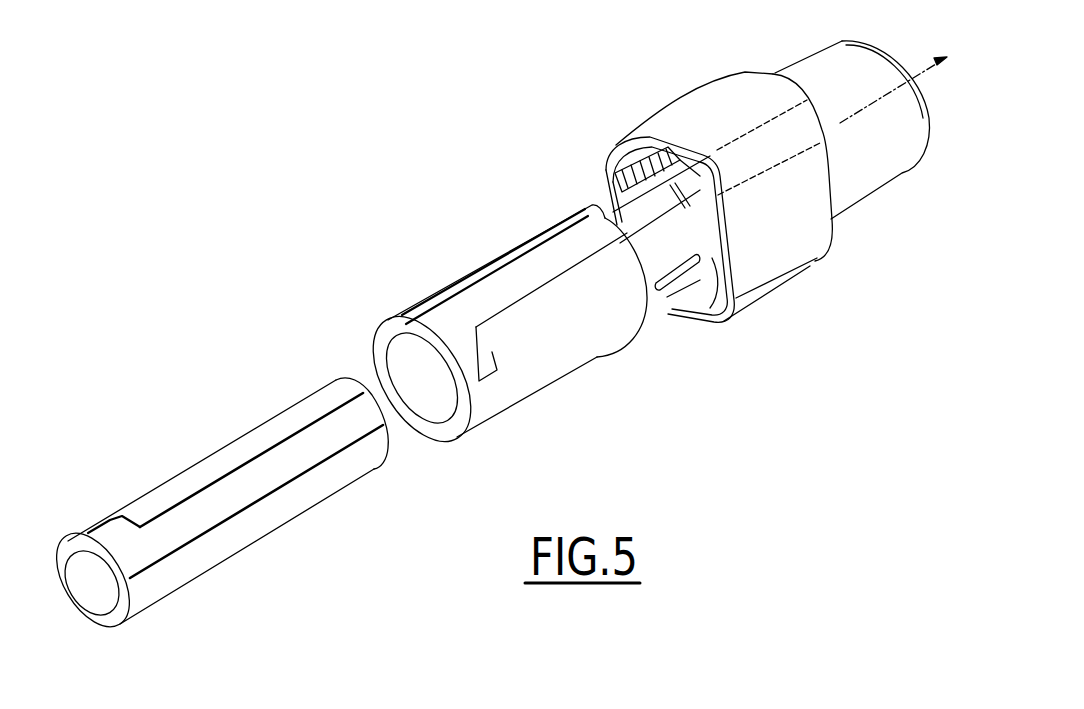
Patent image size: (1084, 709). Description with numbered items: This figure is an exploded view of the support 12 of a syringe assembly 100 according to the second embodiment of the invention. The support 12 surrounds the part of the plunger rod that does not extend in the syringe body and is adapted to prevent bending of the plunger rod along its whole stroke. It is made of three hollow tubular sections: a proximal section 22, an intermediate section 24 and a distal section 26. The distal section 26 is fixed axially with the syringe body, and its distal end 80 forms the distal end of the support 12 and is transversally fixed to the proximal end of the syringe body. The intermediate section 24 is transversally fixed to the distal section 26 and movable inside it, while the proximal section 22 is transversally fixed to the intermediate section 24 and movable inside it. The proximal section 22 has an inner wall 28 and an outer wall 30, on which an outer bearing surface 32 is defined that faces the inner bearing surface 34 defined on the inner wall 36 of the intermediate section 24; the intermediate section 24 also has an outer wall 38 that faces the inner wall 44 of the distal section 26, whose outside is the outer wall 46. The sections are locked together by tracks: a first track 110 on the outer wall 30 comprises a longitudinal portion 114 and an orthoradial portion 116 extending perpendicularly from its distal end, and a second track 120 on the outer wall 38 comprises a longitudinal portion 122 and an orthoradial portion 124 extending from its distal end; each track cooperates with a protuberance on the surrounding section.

The syringe assembly 100 is at (494, 351).
The support 12 is at (623, 269).
The proximal section 22 is at (237, 492).
The intermediate section 24 is at (473, 320).
The distal section 26 is at (760, 221).
The inner wall 28 is at (95, 582).
The outer wall 30 is at (178, 568).
The outer bearing surface 32 is at (358, 458).
The inner bearing surface 34 is at (403, 357).
The inner wall 36 is at (432, 402).
The outer wall 38 is at (498, 392).
The inner wall 44 is at (703, 323).
The outer wall 46 is at (780, 232).
The distal end 80 is at (730, 313).
The first track 110 is at (270, 477).
The longitudinal portion 114 is at (320, 447).
The orthoradial portion 116 is at (103, 520).
The second track 120 is at (533, 277).
The longitudinal portion 122 is at (559, 250).
The orthoradial portion 124 is at (470, 353).